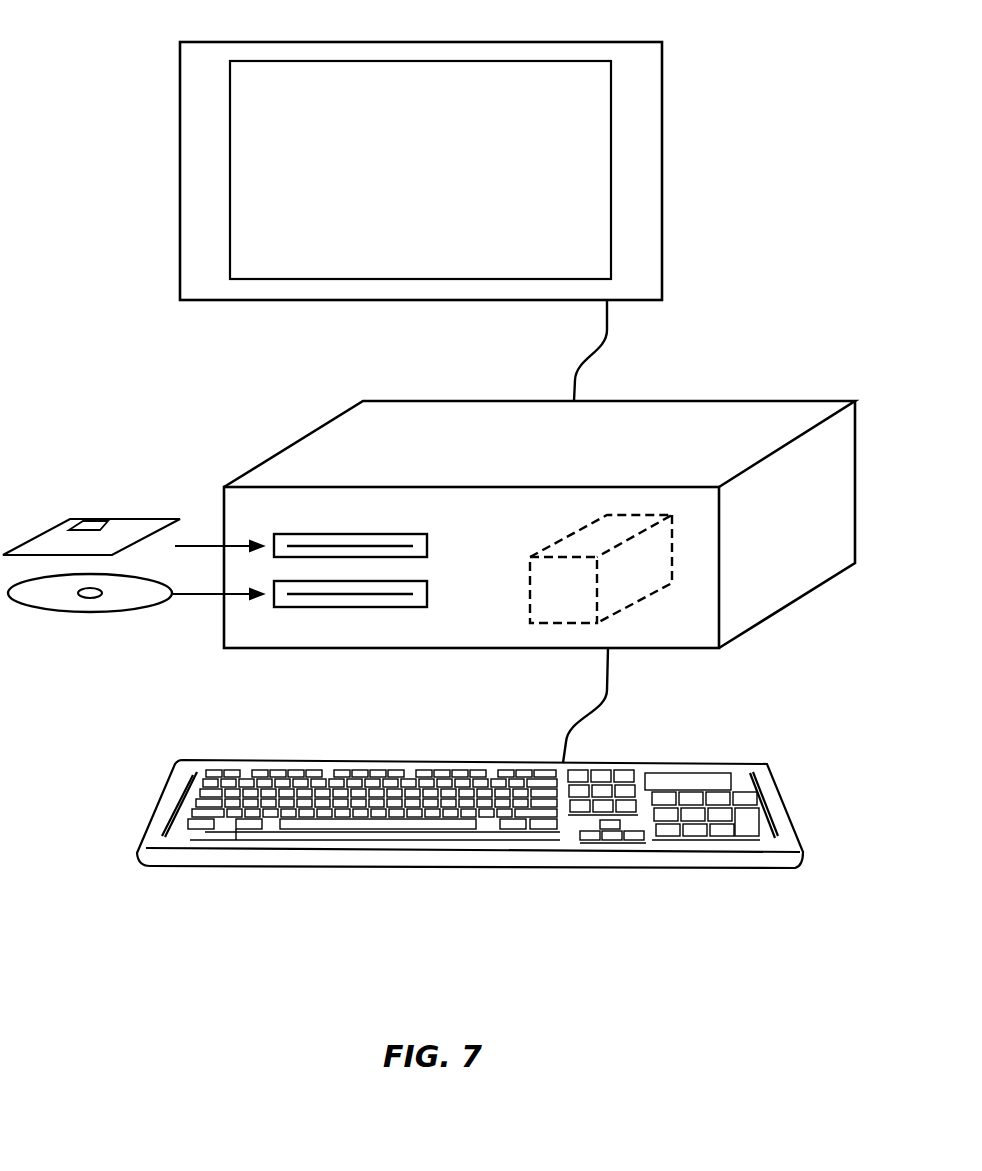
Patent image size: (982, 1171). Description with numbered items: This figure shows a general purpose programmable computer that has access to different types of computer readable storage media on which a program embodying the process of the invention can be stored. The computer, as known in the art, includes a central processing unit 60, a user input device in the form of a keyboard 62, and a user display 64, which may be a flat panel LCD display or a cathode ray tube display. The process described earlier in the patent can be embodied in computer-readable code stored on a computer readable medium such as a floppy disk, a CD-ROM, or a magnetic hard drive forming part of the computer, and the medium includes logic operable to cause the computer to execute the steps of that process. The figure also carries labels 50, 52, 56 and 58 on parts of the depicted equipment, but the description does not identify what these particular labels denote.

The computer system unit 50 is at (757, 401).
The display monitor 52 is at (605, 42).
The CD-ROM drive slot 56 is at (313, 607).
The floppy disk drive slot 58 is at (382, 534).
The central processing unit 60 is at (530, 590).
The keyboard 62 is at (90, 613).
The user display 64 is at (123, 519).